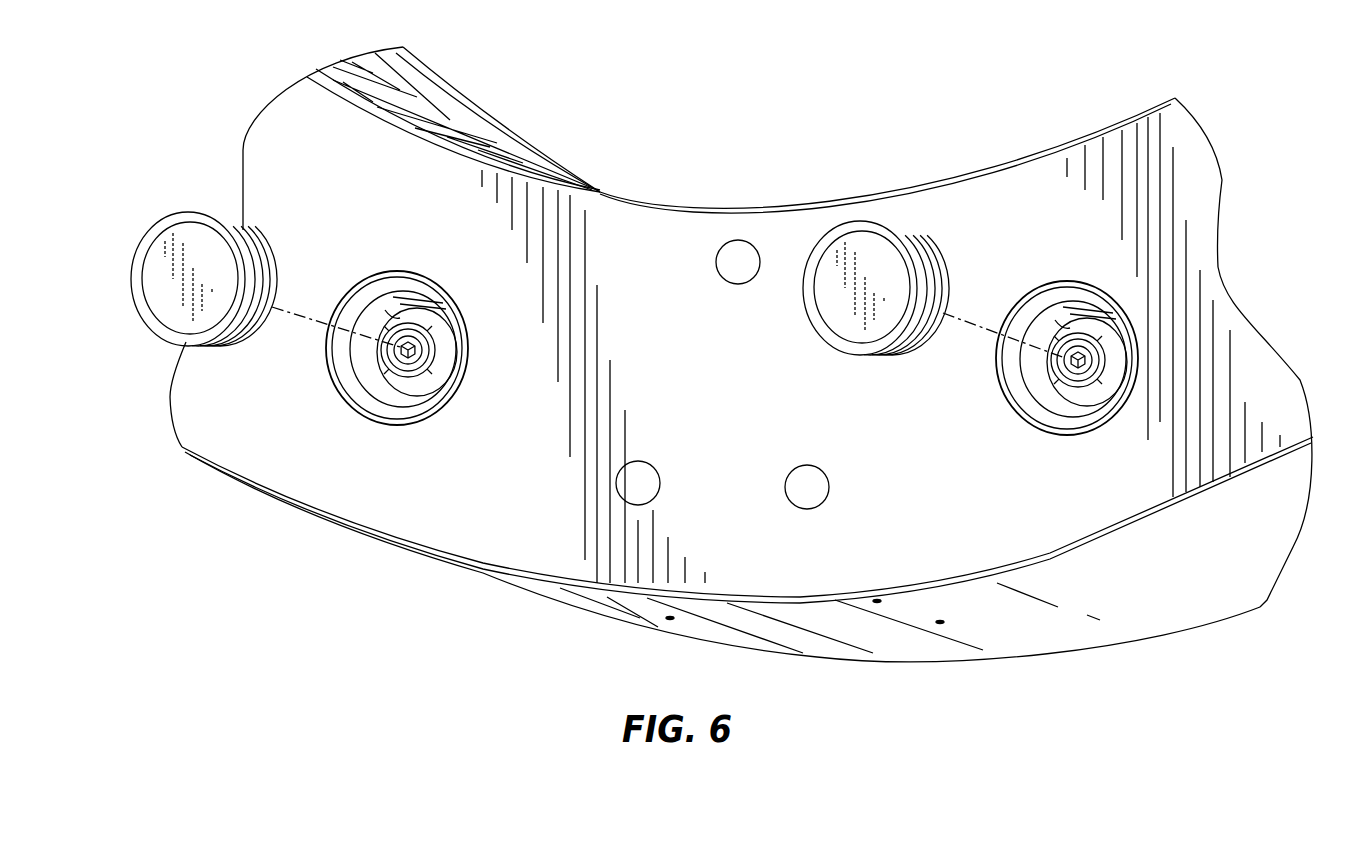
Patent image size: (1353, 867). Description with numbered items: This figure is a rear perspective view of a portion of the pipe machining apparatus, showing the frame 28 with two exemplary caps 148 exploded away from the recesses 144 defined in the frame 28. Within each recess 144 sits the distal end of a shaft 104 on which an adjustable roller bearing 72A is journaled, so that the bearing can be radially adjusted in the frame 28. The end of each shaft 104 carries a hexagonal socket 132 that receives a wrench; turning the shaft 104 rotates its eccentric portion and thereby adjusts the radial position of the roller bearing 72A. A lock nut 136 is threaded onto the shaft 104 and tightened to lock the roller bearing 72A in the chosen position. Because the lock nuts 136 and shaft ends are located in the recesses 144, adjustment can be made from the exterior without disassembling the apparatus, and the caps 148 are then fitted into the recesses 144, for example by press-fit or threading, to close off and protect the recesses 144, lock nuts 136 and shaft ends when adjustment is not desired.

The frame 28 is at (645, 233).
The cap 148 is at (191, 240).
The adjustable roller bearing 72A is at (377, 403).
The recess 144 is at (390, 297).
The lock nut 136 is at (457, 367).
The shaft 104 is at (460, 317).
The hexagonal socket 132 is at (388, 351).